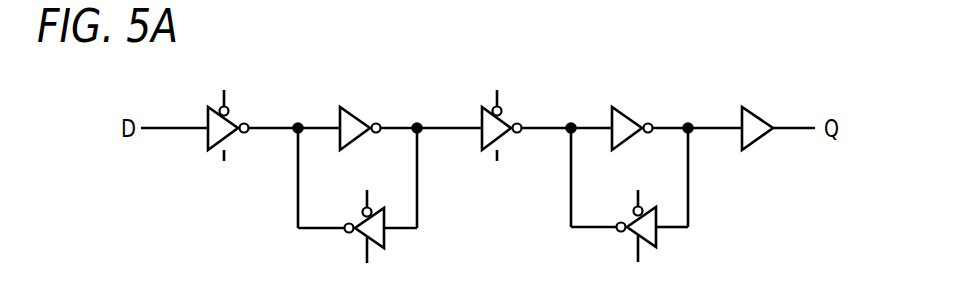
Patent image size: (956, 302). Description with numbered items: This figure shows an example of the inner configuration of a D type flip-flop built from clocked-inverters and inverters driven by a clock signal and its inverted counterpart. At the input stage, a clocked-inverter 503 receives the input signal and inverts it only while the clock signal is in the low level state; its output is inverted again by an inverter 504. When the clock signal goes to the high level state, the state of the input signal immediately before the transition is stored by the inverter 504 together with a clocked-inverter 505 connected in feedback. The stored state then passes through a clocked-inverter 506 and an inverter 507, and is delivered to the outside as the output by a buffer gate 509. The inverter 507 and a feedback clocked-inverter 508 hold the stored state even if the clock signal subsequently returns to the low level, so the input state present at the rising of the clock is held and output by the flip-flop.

The clocked-inverter 503 is at (208, 122).
The inverter 504 is at (360, 108).
The clocked-inverter 505 is at (386, 237).
The clocked-inverter 506 is at (482, 122).
The inverter 507 is at (632, 108).
The clocked-inverter 508 is at (658, 236).
The buffer gate 509 is at (760, 108).